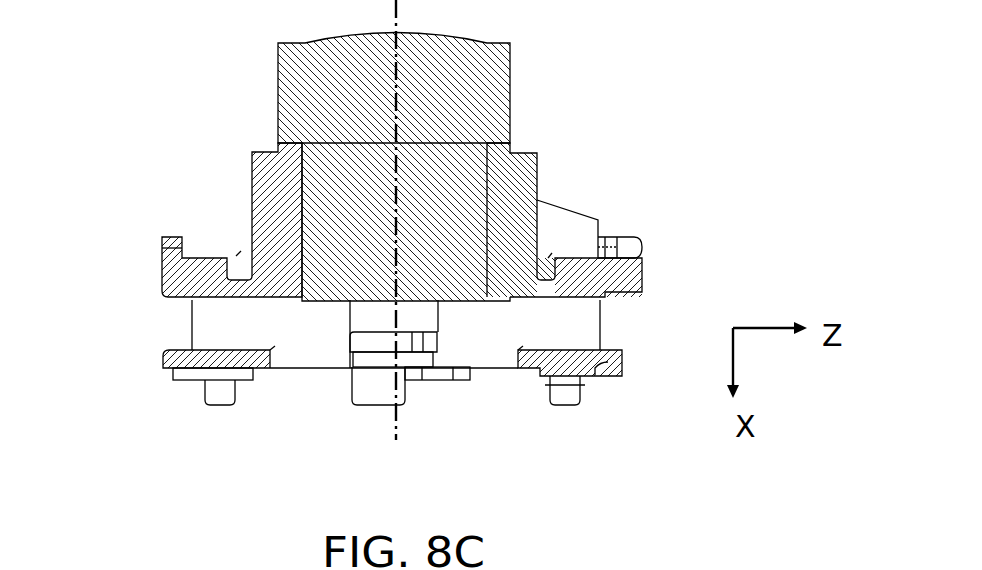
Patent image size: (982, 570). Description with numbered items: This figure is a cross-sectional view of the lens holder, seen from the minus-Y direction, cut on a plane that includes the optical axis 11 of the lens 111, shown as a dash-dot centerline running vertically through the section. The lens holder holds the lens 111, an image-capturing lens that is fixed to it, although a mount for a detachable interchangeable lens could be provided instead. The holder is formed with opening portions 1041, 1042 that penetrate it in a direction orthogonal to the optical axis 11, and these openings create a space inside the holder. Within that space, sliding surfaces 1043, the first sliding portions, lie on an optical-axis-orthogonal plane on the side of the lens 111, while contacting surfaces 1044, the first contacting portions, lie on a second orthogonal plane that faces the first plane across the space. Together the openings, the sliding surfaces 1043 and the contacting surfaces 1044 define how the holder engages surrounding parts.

The optical axis 11 is at (395, 155).
The lens 111 is at (410, 70).
The opening portion 1041 is at (173, 315).
The opening portion 1042 is at (593, 318).
The sliding surface 1043 is at (517, 302).
The contacting surface 1044 is at (520, 350).